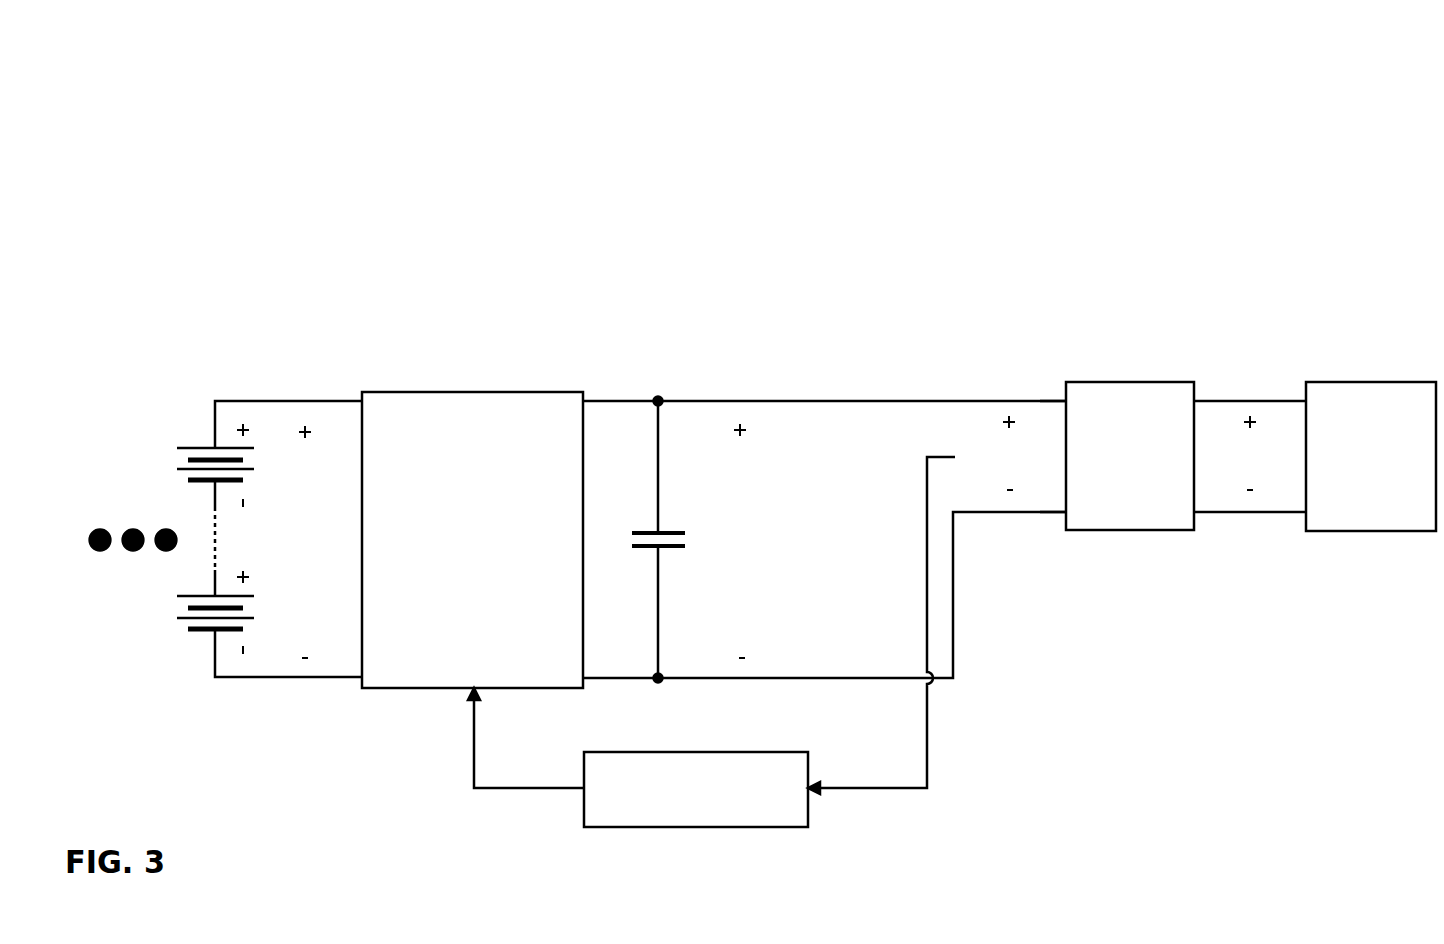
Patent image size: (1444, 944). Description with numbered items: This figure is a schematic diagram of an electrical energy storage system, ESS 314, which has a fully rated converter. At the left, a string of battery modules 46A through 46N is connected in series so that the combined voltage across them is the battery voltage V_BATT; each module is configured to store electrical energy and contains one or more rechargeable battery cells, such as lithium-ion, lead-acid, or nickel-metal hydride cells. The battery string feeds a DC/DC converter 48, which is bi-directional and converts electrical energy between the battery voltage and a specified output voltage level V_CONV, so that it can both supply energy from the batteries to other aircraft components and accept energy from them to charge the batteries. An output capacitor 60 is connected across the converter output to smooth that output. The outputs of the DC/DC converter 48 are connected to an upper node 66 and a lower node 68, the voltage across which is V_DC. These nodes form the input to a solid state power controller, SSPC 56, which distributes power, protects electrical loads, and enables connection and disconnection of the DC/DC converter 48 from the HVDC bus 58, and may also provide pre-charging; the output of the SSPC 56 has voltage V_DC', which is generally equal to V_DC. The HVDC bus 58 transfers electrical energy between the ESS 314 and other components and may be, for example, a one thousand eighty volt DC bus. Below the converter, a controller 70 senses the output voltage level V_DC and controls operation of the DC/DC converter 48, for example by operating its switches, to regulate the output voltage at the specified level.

The ESS 314 is at (1207, 73).
The battery module 46A is at (178, 468).
The battery module 46N is at (178, 616).
The DC/DC converter 48 is at (472, 540).
The output capacitor 60 is at (672, 528).
The upper node 66 is at (1064, 398).
The lower node 68 is at (1064, 514).
The solid state power controller 56 is at (1130, 456).
The HVDC bus 58 is at (1371, 456).
The controller 70 is at (696, 789).